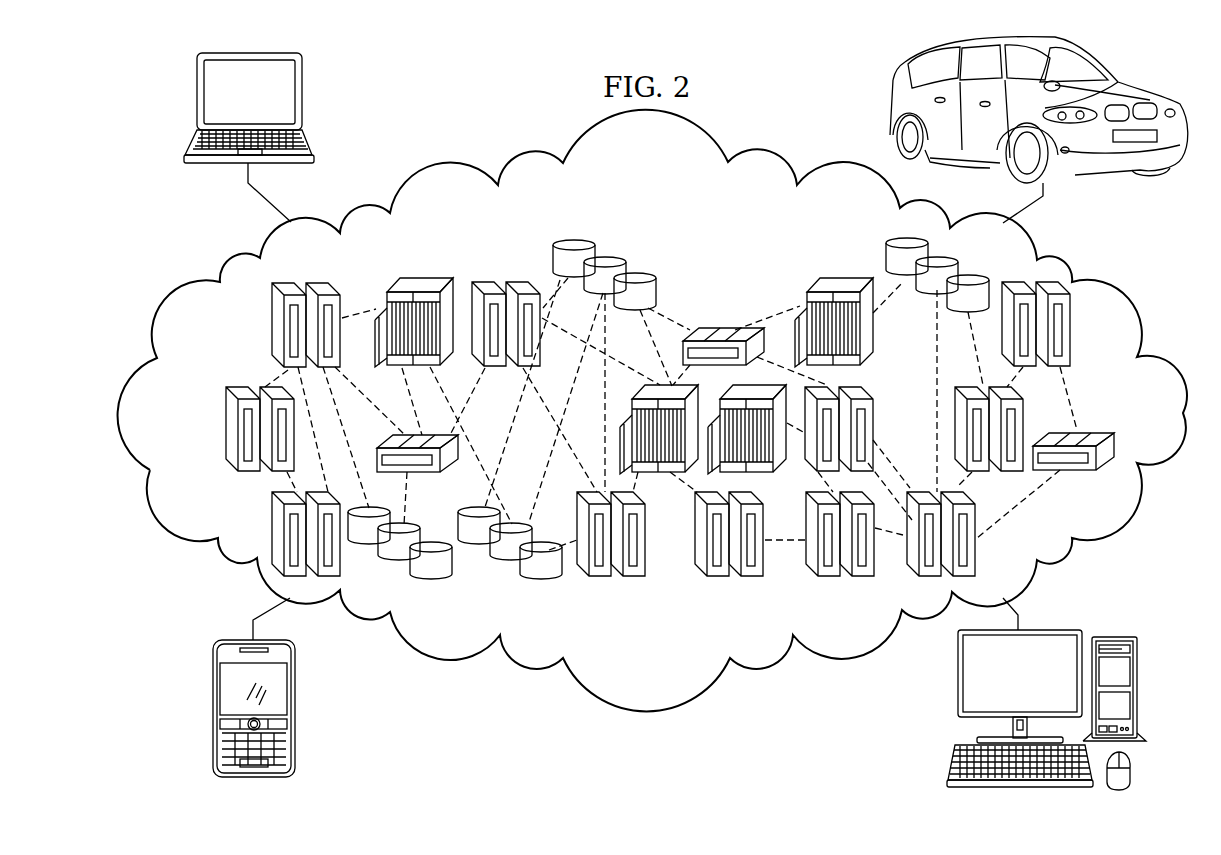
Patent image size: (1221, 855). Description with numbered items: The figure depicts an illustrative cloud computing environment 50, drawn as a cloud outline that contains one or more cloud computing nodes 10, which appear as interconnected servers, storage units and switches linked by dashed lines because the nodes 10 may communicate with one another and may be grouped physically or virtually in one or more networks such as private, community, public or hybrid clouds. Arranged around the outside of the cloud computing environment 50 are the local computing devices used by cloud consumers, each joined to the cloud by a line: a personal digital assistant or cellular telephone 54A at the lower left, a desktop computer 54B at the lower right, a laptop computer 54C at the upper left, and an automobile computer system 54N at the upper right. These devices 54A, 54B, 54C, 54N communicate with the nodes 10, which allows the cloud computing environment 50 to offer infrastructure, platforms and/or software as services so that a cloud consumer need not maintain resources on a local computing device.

The cloud computing environment 50 is at (516, 151).
The cloud computing nodes 10 is at (492, 234).
The personal digital assistant or cellular telephone 54A is at (213, 706).
The desktop computer 54B is at (1141, 753).
The laptop computer 54C is at (196, 93).
The automobile computer system 54N is at (1139, 86).